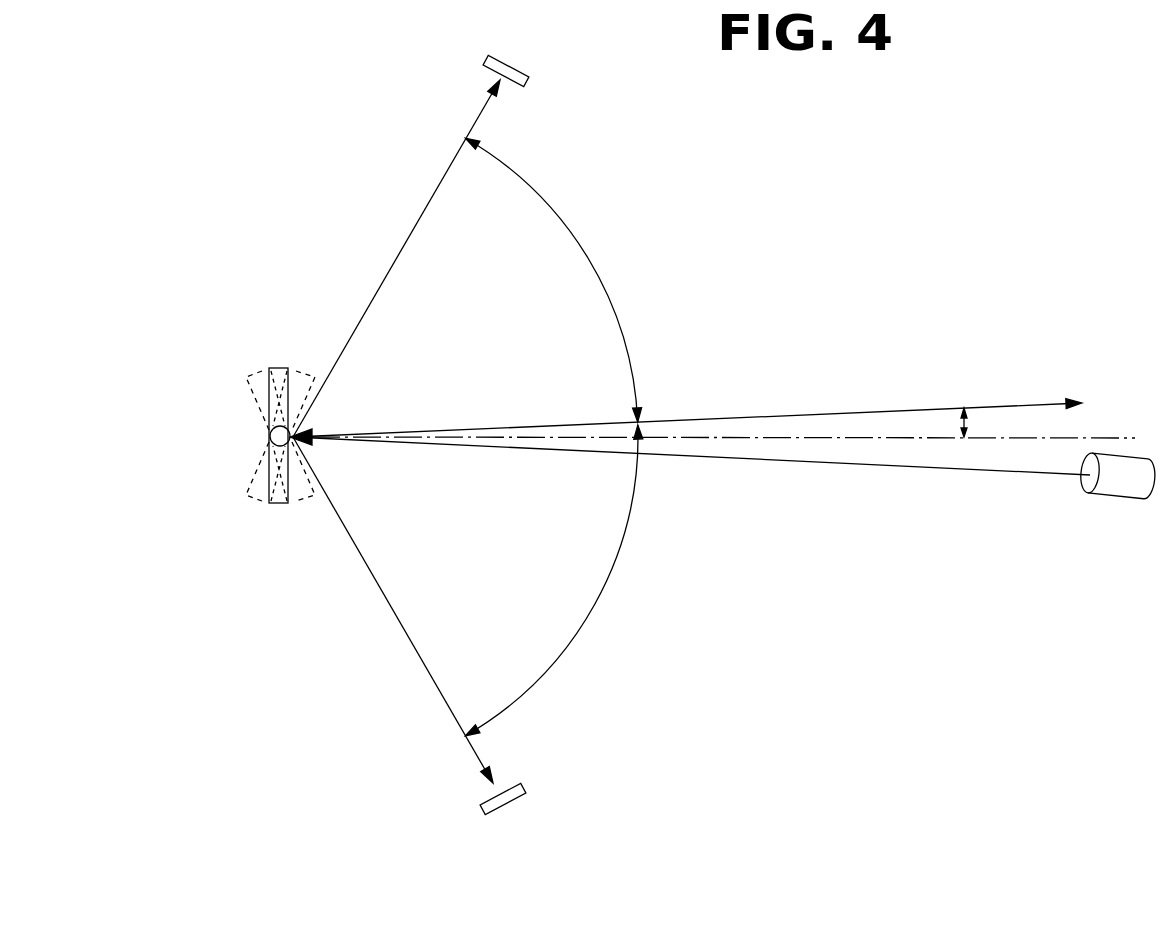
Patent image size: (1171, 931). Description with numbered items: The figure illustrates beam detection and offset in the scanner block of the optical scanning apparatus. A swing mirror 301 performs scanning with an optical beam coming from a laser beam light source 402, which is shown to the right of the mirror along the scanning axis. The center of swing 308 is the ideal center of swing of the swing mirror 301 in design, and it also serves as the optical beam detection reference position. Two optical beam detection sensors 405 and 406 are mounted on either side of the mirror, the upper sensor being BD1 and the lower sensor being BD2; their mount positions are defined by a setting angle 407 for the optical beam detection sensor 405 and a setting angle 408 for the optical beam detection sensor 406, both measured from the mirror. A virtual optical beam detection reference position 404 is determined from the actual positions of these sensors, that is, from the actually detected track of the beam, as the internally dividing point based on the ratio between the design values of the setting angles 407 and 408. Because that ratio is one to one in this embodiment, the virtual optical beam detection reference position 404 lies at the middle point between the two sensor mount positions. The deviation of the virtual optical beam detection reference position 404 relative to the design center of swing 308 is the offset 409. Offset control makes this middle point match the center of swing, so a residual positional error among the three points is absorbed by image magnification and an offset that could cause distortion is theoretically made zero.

The swing mirror 301 is at (271, 437).
The center of swing 308 is at (1110, 435).
The laser beam light source 402 is at (1120, 500).
The virtual optical beam detection reference position 404 is at (1007, 404).
The optical beam detection sensor 405 is at (528, 80).
The optical beam detection sensor 406 is at (522, 792).
The setting angle 407 is at (615, 312).
The setting angle 408 is at (597, 600).
The offset 409 is at (962, 425).